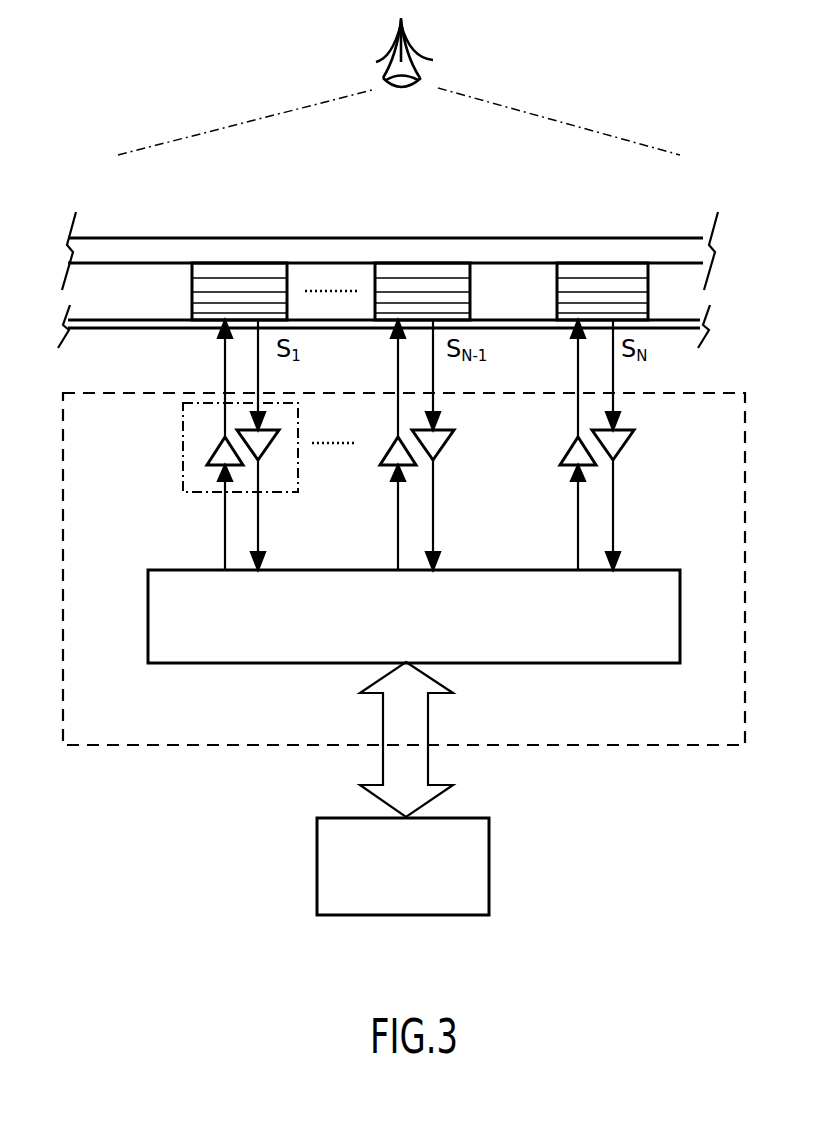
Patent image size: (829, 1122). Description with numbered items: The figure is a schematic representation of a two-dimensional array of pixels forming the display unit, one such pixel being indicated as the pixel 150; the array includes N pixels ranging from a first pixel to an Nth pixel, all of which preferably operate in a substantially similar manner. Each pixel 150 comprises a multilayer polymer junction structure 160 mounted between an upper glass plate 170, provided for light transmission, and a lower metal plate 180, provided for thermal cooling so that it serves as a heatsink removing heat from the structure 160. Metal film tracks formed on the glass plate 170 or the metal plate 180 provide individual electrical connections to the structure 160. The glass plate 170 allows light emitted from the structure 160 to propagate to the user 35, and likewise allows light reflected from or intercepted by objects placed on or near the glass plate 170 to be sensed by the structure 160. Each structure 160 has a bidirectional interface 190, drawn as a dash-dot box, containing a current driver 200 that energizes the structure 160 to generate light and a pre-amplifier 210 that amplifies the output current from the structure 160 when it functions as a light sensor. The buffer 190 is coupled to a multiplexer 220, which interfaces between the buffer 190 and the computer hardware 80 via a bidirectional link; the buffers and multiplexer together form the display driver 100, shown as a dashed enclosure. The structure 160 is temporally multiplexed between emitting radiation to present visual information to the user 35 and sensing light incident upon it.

The user 35 is at (402, 65).
The pixel 150 is at (388, 263).
The multilayer polymer junction structure 160 is at (228, 287).
The upper glass plate 170 is at (502, 250).
The lower metal plate 180 is at (122, 325).
The bidirectional interface 190 is at (368, 486).
The current driver 200 is at (208, 457).
The pre-amplifier 210 is at (259, 441).
The multiplexer 220 is at (414, 616).
The display driver 100 is at (404, 569).
The computer hardware 80 is at (403, 866).